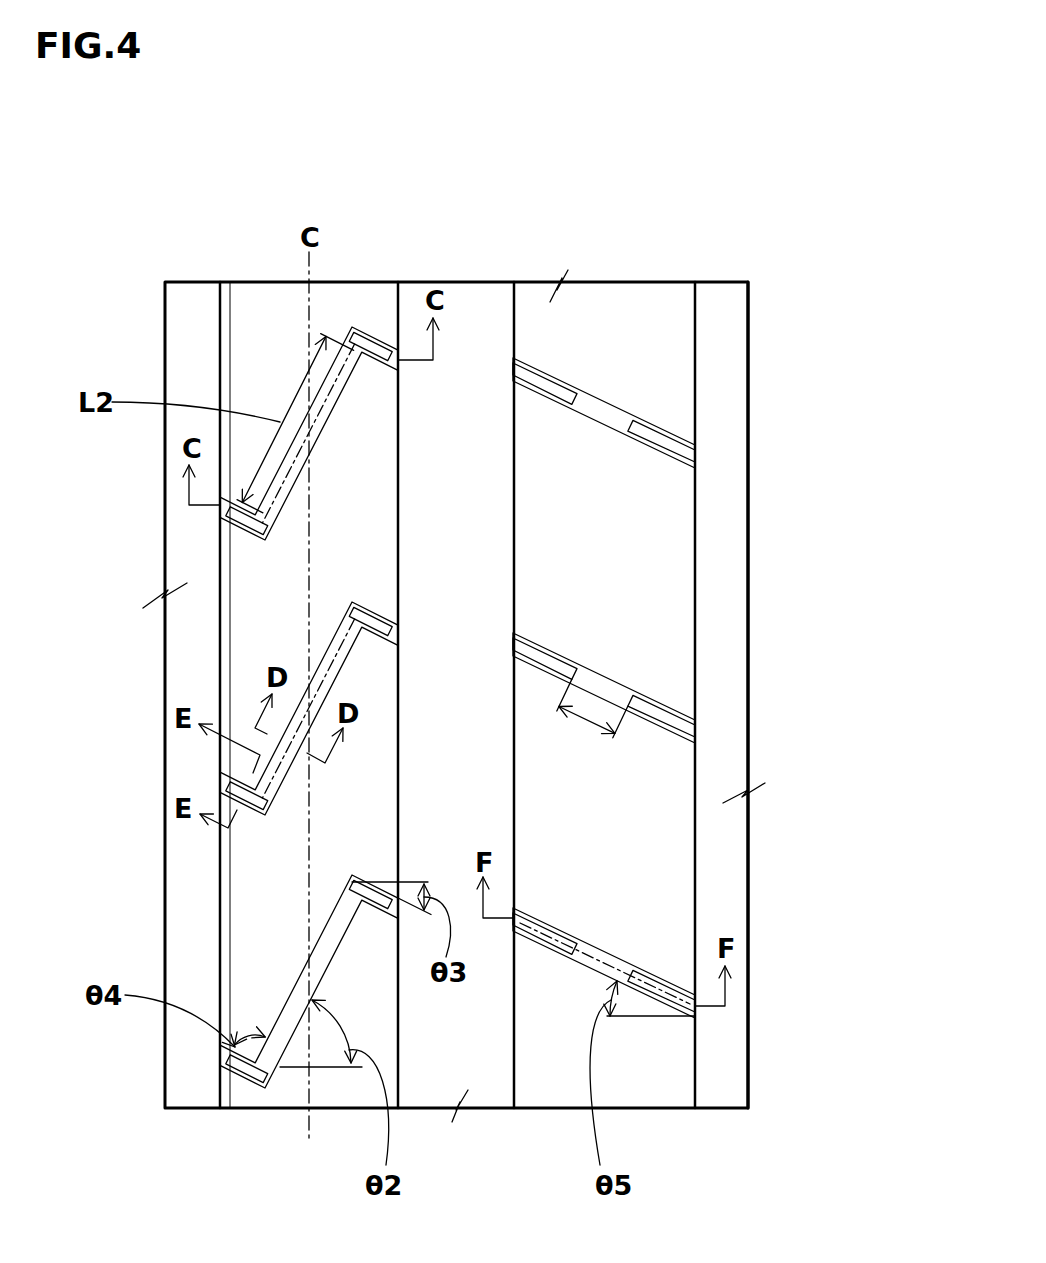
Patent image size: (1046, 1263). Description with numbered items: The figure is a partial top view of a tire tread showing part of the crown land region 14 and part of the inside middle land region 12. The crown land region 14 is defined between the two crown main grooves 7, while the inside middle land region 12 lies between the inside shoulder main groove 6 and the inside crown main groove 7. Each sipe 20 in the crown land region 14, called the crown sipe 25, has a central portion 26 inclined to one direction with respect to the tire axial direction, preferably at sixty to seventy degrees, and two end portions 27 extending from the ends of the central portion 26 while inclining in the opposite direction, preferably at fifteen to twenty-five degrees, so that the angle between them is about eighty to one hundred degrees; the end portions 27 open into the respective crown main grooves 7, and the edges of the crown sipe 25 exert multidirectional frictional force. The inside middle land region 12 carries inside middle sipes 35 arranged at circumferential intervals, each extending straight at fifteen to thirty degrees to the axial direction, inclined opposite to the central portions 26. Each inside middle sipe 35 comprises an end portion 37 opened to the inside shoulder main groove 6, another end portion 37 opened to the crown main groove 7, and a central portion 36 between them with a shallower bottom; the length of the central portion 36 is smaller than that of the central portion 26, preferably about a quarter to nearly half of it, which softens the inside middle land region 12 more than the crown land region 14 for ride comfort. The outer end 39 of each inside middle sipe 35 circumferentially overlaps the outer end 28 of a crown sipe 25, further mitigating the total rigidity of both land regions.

The inside shoulder main groove 6 is at (722, 308).
The crown main groove 7 is at (192, 308).
The inside middle land region 12 is at (616, 308).
The crown land region 14 is at (265, 308).
The sipe 20 is at (342, 640).
The crown sipe 25 is at (293, 1013).
The central portion 26 is at (334, 402).
The end portion 27 is at (233, 780).
The outer end 28 is at (402, 633).
The inside middle sipe 35 is at (836, 568).
The central portion 36 is at (601, 689).
The end portion 37 is at (548, 653).
The outer end 39 is at (506, 641).